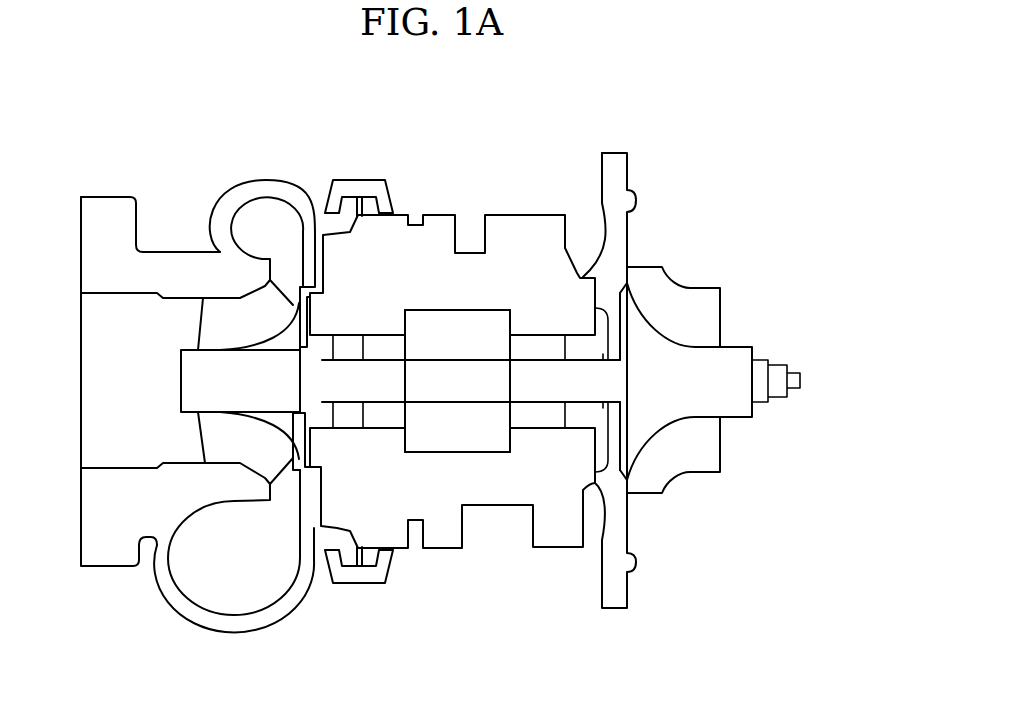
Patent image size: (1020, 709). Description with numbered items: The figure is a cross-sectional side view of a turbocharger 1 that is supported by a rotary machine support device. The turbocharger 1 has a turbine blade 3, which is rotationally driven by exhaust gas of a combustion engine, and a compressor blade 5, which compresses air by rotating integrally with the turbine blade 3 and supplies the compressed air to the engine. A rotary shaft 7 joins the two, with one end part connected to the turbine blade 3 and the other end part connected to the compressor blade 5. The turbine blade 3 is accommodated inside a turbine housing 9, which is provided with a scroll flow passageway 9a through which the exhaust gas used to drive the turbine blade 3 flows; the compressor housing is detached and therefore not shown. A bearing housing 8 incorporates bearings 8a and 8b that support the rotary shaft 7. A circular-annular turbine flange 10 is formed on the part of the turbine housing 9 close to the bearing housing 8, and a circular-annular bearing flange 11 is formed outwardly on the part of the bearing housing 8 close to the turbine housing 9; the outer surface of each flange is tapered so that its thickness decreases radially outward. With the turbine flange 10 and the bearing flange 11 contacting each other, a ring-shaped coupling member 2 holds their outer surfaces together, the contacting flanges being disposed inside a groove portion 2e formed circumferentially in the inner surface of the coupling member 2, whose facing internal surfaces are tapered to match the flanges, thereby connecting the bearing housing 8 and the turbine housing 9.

The turbocharger 1 is at (650, 142).
The coupling member 2 is at (376, 184).
The groove portion 2e is at (352, 198).
The turbine blade 3 is at (213, 318).
The compressor blade 5 is at (692, 296).
The rotary shaft 7 is at (540, 402).
The bearing housing 8 is at (541, 216).
The bearing 8a is at (352, 420).
The bearing 8b is at (572, 424).
The turbine housing 9 is at (107, 562).
The scroll flow passageway 9a is at (268, 218).
The turbine flange 10 is at (337, 211).
The bearing flange 11 is at (370, 205).